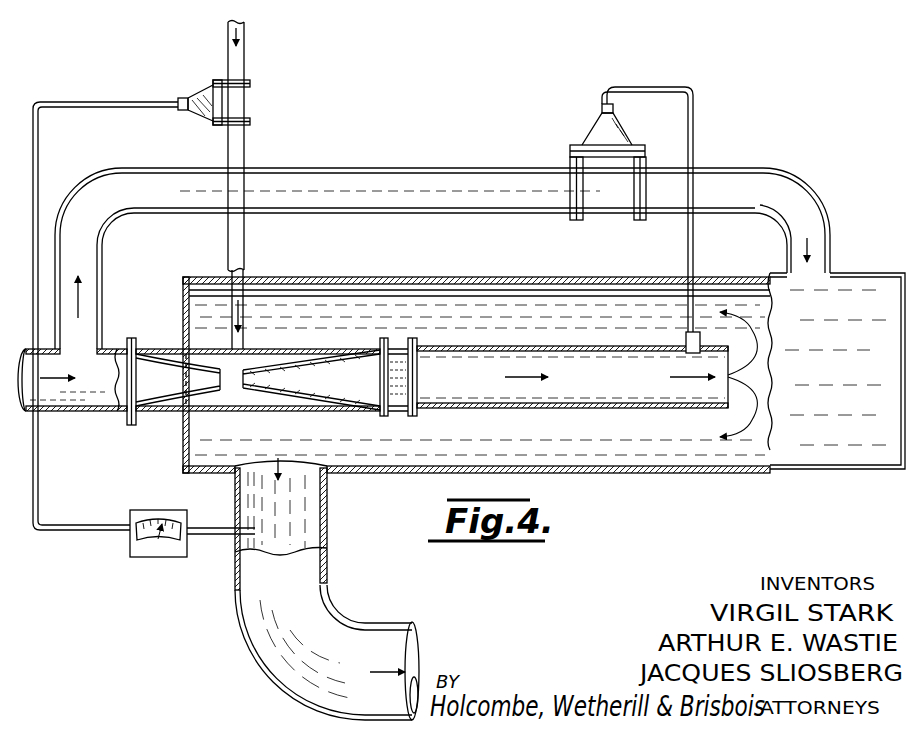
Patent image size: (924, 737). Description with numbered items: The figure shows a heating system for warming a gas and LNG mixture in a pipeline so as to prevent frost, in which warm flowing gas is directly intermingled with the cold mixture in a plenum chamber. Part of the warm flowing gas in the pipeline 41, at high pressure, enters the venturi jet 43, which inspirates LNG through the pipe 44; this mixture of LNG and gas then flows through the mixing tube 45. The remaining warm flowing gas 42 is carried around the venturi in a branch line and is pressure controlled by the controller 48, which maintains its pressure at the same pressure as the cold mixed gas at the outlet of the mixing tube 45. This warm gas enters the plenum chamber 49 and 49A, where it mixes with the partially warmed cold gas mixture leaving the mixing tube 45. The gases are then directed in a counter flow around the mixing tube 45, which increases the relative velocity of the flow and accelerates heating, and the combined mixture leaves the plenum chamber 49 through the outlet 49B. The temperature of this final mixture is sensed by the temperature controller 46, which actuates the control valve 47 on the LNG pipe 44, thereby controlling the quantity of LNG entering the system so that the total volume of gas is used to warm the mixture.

The pipeline 41 is at (62, 408).
The warm flowing gas 42 is at (85, 254).
The venturi jet 43 is at (228, 380).
The pipe 44 is at (232, 57).
The mixing tube 45 is at (468, 360).
The temperature controller 46 is at (148, 552).
The control valve 47 is at (205, 100).
The controller 48 is at (603, 138).
The plenum chamber 49 is at (410, 295).
The plenum chamber 49A is at (805, 282).
The outlet 49B is at (310, 467).